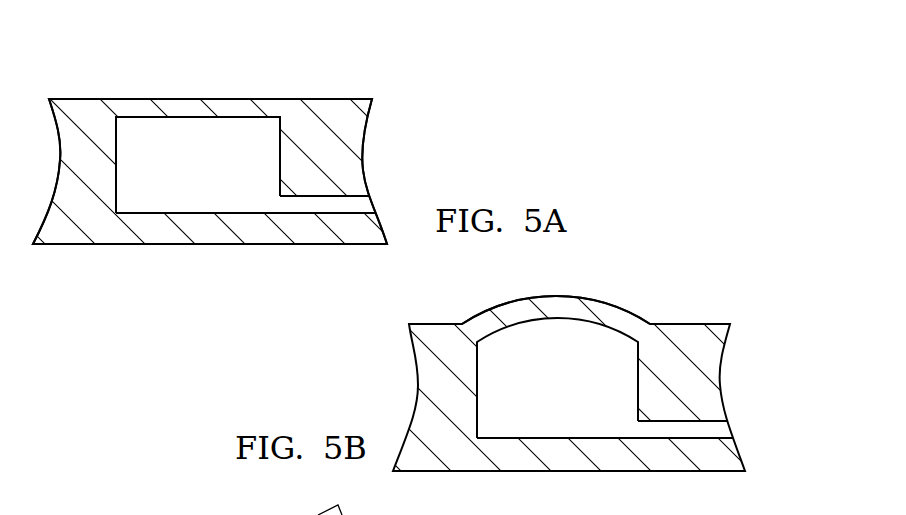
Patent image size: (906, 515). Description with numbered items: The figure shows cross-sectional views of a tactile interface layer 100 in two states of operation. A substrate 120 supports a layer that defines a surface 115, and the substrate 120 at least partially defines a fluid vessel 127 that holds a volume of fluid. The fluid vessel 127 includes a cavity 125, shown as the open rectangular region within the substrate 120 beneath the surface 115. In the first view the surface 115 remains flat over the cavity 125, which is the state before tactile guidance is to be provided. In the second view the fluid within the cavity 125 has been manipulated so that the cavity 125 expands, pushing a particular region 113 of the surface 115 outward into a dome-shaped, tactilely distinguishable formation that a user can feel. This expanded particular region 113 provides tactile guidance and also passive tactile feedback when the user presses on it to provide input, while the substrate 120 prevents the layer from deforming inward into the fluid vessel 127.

In FIG. 5A, the tactile interface layer 100 is at (163, 58).
In FIG. 5A, the particular region 113 is at (240, 91).
In FIG. 5B, the particular region 113 is at (591, 291).
In FIG. 5A, the surface 115 is at (81, 99).
In FIG. 5B, the surface 115 is at (442, 323).
In FIG. 5A, the substrate 120 is at (350, 176).
In FIG. 5B, the substrate 120 is at (702, 395).
In FIG. 5A, the cavity 125 is at (216, 169).
In FIG. 5B, the cavity 125 is at (582, 385).
In FIG. 5A, the fluid vessel 127 is at (208, 190).
In FIG. 5B, the fluid vessel 127 is at (592, 415).